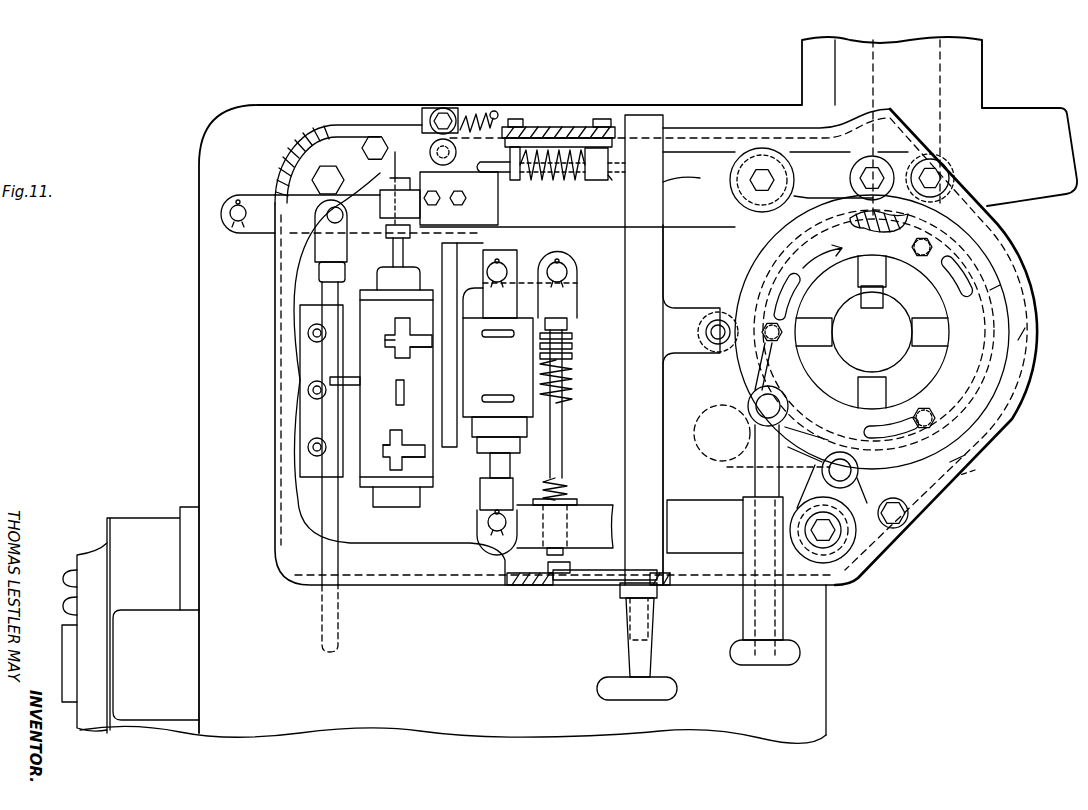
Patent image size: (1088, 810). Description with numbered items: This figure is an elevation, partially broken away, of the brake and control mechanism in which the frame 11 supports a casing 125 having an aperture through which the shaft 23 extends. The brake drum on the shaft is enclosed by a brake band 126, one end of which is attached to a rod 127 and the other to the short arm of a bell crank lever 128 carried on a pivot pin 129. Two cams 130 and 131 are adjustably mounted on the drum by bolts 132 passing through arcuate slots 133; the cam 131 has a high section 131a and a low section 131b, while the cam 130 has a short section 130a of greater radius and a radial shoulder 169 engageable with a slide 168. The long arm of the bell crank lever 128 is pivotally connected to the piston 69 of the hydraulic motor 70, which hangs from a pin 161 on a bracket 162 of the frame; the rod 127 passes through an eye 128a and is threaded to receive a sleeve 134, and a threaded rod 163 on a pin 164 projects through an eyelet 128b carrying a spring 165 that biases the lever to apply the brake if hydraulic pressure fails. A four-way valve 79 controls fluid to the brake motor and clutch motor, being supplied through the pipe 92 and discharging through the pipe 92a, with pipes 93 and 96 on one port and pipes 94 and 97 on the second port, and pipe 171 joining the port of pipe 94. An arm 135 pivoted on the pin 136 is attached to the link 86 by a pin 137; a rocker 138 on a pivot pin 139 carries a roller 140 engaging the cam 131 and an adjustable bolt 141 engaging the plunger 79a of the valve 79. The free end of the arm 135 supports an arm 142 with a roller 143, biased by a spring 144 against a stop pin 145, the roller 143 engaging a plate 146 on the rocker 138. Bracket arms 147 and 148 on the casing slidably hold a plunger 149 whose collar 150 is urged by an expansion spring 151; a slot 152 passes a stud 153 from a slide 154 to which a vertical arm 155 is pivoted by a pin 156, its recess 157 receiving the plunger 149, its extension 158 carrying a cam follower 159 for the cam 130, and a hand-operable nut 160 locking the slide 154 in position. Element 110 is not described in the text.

The frame 11 is at (210, 338).
The shaft 23 is at (890, 322).
The piston 69 is at (478, 488).
The hydraulic motor 70 is at (540, 410).
The four-way valve 79 is at (433, 467).
The plunger 79a is at (392, 249).
The link 86 is at (320, 630).
The pipe 92 is at (330, 381).
The pipe 92a is at (395, 392).
The pipe 93 is at (402, 318).
The pipe 94 is at (412, 445).
The pipe 96 is at (420, 350).
The pipe 97 is at (412, 460).
The contact 110 is at (392, 344).
The casing 125 is at (1032, 270).
The brake band 126 is at (755, 366).
The rod 127 is at (752, 478).
The bell crank lever 128 is at (865, 490).
The eye 128a is at (736, 522).
The eyelet 128b is at (525, 548).
The pivot pin 129 is at (835, 535).
The cam 130 is at (1012, 384).
The short section 130a is at (968, 478).
The cam 131 is at (990, 398).
The high section 131a is at (958, 460).
The low section 131b is at (1000, 285).
The bolts 132 is at (940, 422).
The arcuate slots 133 is at (921, 406).
The sleeve 134 is at (786, 625).
The arm 135 is at (245, 196).
The pin 136 is at (230, 215).
The pin 137 is at (345, 214).
The rocker 138 is at (703, 165).
The pivot pin 139 is at (756, 190).
The roller 140 is at (850, 177).
The adjustable bolt 141 is at (390, 140).
The arm 142 is at (450, 108).
The roller 143 is at (520, 127).
The spring 144 is at (514, 119).
The pin 145 is at (480, 114).
The plate 146 is at (470, 205).
The arm 147 is at (512, 160).
The arm 148 is at (600, 148).
The plunger 149 is at (640, 160).
The collar 150 is at (600, 172).
The expansion spring 151 is at (1018, 340).
The slot 152 is at (590, 575).
The stud 153 is at (632, 583).
The slide 154 is at (552, 578).
The vertical arm 155 is at (650, 398).
The pin 156 is at (660, 587).
The recess 157 is at (663, 185).
The extension 158 is at (698, 314).
The cam follower 159 is at (760, 322).
The hand-operable nut 160 is at (630, 655).
The pin 161 is at (503, 268).
The bracket 162 is at (444, 248).
The threaded rod 163 is at (565, 398).
The pin 164 is at (572, 260).
The spring 165 is at (568, 486).
The slide 168 is at (940, 130).
The radial shoulder 169 is at (870, 236).
The pipe 171 is at (380, 460).